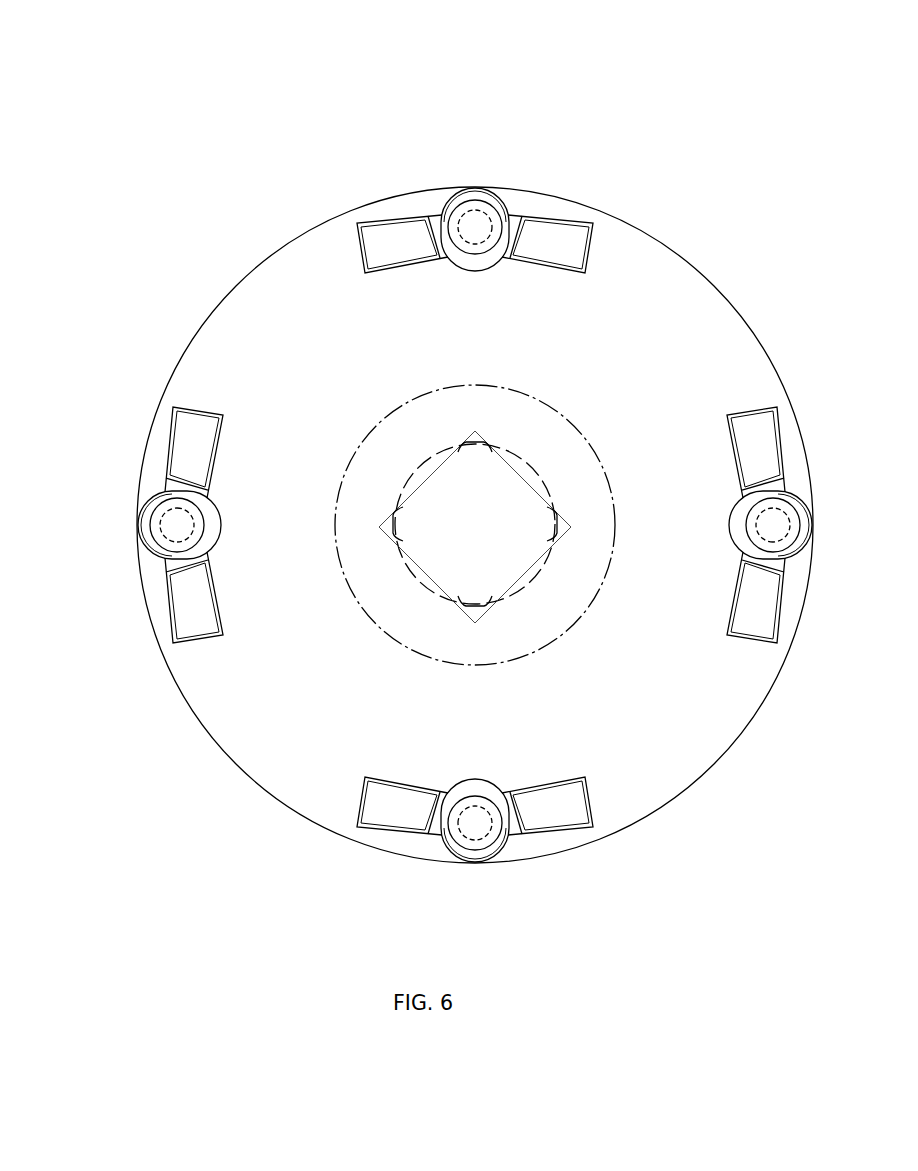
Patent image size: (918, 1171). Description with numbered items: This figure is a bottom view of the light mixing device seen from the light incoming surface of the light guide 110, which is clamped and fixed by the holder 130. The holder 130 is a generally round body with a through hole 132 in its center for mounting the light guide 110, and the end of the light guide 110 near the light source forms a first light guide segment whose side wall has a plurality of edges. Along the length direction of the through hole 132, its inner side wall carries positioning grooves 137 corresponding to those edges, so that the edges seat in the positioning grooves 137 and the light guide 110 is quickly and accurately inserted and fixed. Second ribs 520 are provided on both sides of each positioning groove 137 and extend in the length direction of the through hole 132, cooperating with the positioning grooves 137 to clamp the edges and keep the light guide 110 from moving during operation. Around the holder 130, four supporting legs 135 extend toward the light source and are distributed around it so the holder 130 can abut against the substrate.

The light guide 110 is at (477, 523).
The holder 130 is at (283, 703).
The through hole 132 is at (523, 572).
The supporting leg 135 is at (475, 226).
The positioning groove 137 is at (473, 437).
The second rib 520 is at (555, 512).